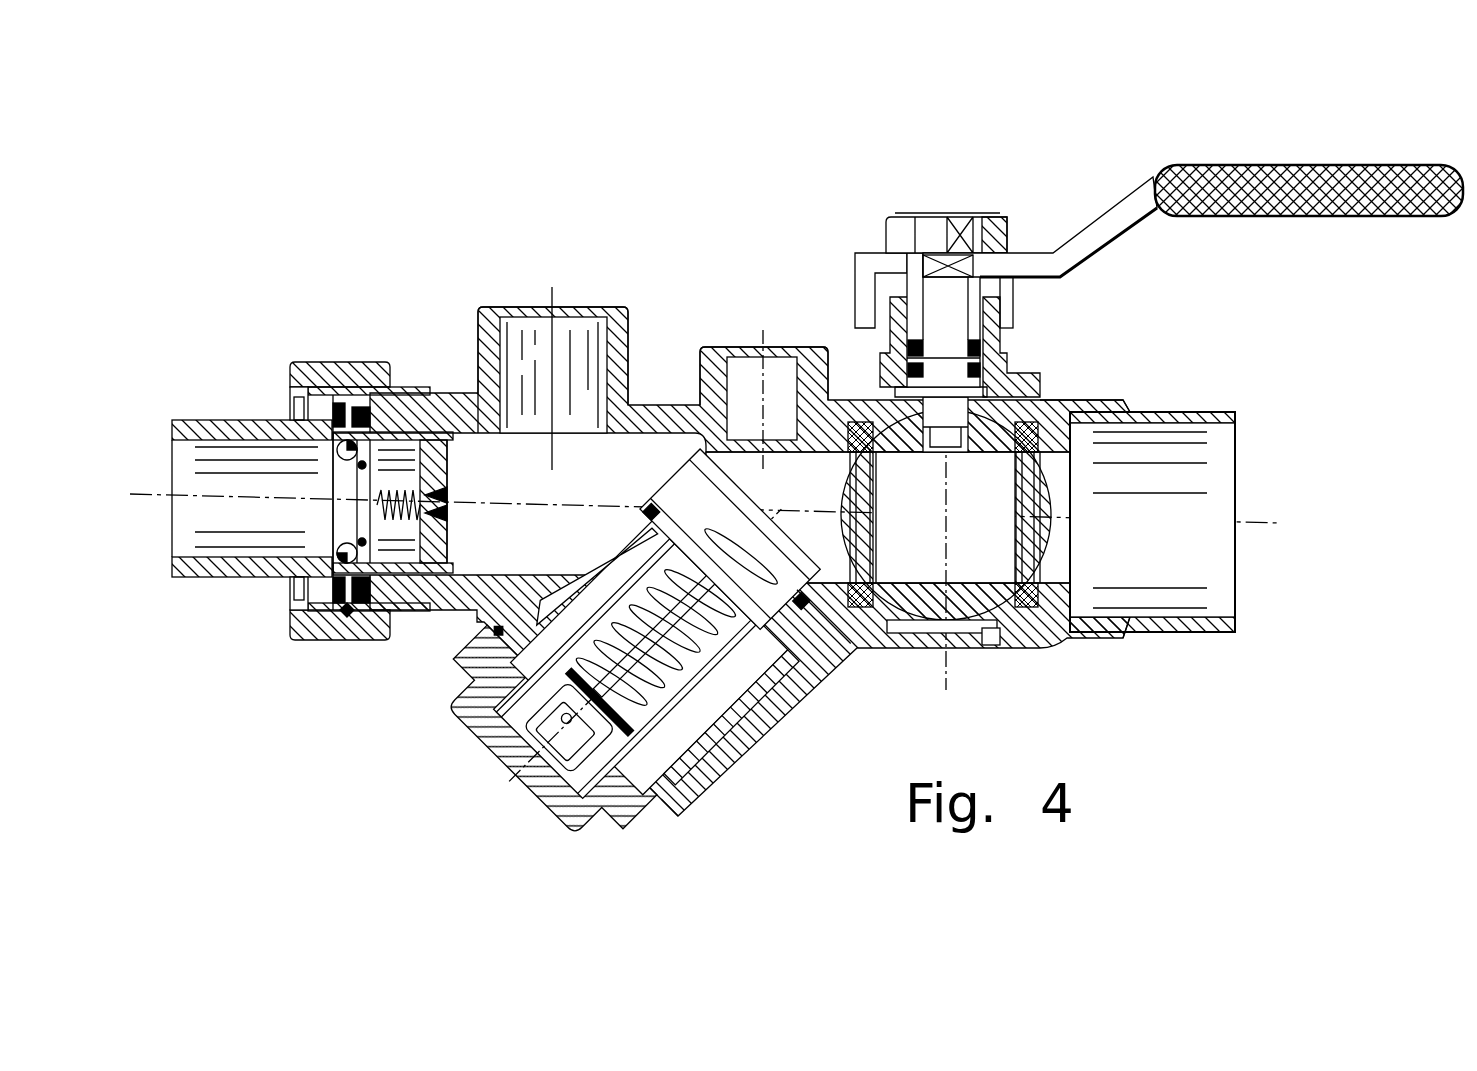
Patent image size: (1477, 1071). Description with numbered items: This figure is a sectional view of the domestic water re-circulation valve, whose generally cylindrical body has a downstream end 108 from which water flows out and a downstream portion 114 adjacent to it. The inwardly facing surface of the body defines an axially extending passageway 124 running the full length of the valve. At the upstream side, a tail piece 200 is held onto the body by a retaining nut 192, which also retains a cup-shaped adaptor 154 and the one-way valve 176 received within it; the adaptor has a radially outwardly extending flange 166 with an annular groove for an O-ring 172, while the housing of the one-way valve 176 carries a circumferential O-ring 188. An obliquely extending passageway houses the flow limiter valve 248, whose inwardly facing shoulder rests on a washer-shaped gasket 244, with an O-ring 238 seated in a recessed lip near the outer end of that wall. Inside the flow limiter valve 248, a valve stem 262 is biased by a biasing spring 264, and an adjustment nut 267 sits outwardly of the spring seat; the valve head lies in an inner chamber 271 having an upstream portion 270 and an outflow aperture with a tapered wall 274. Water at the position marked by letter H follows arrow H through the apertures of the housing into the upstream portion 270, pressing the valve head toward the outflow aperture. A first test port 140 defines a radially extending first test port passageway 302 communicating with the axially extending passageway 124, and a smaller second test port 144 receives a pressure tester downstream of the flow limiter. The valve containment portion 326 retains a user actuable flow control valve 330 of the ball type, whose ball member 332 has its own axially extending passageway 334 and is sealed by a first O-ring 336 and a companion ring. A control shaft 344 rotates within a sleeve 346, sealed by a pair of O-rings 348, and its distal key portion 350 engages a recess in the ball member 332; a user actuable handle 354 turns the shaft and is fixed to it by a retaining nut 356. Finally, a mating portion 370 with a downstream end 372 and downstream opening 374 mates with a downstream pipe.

The downstream end 108 is at (1179, 532).
The downstream portion 114 is at (1163, 635).
The axially extending passageway 124 is at (466, 546).
The first test port 140 is at (553, 307).
The second test port 144 is at (762, 347).
The cup-shaped adaptor 154 is at (323, 645).
The radially outwardly extending flange 166 is at (338, 383).
The O-ring 172 is at (333, 423).
The one-way valve 176 is at (430, 432).
The circumferential O-ring 188 is at (323, 547).
The retaining nut 192 is at (293, 643).
The tail piece 200 is at (200, 577).
The O-ring 238 is at (658, 812).
The washer-shaped gasket 244 is at (828, 637).
The flow limiter valve 248 is at (498, 730).
The valve stem 262 is at (658, 745).
The biasing spring 264 is at (673, 740).
The adjustment nut 267 is at (567, 770).
The upstream portion 270 is at (798, 645).
The inner chamber 271 is at (772, 643).
The tapered wall 274 is at (770, 563).
The first test port passageway 302 is at (527, 327).
The valve containment portion 326 is at (1032, 660).
The flow control valve 330 is at (1084, 408).
The ball member 332 is at (1073, 397).
The axially extending passageway 334 is at (930, 496).
The first O-ring 336 is at (858, 388).
The control shaft 344 is at (957, 413).
The sleeve 346 is at (922, 303).
The O-rings 348 is at (1007, 322).
The distal key portion 350 is at (950, 452).
The user actuable handle 354 is at (1273, 162).
The retaining nut 356 is at (888, 233).
The mating portion 370 is at (1158, 392).
The downstream end 372 is at (1235, 632).
The downstream opening 374 is at (1222, 463).
The arrow H is at (653, 518).